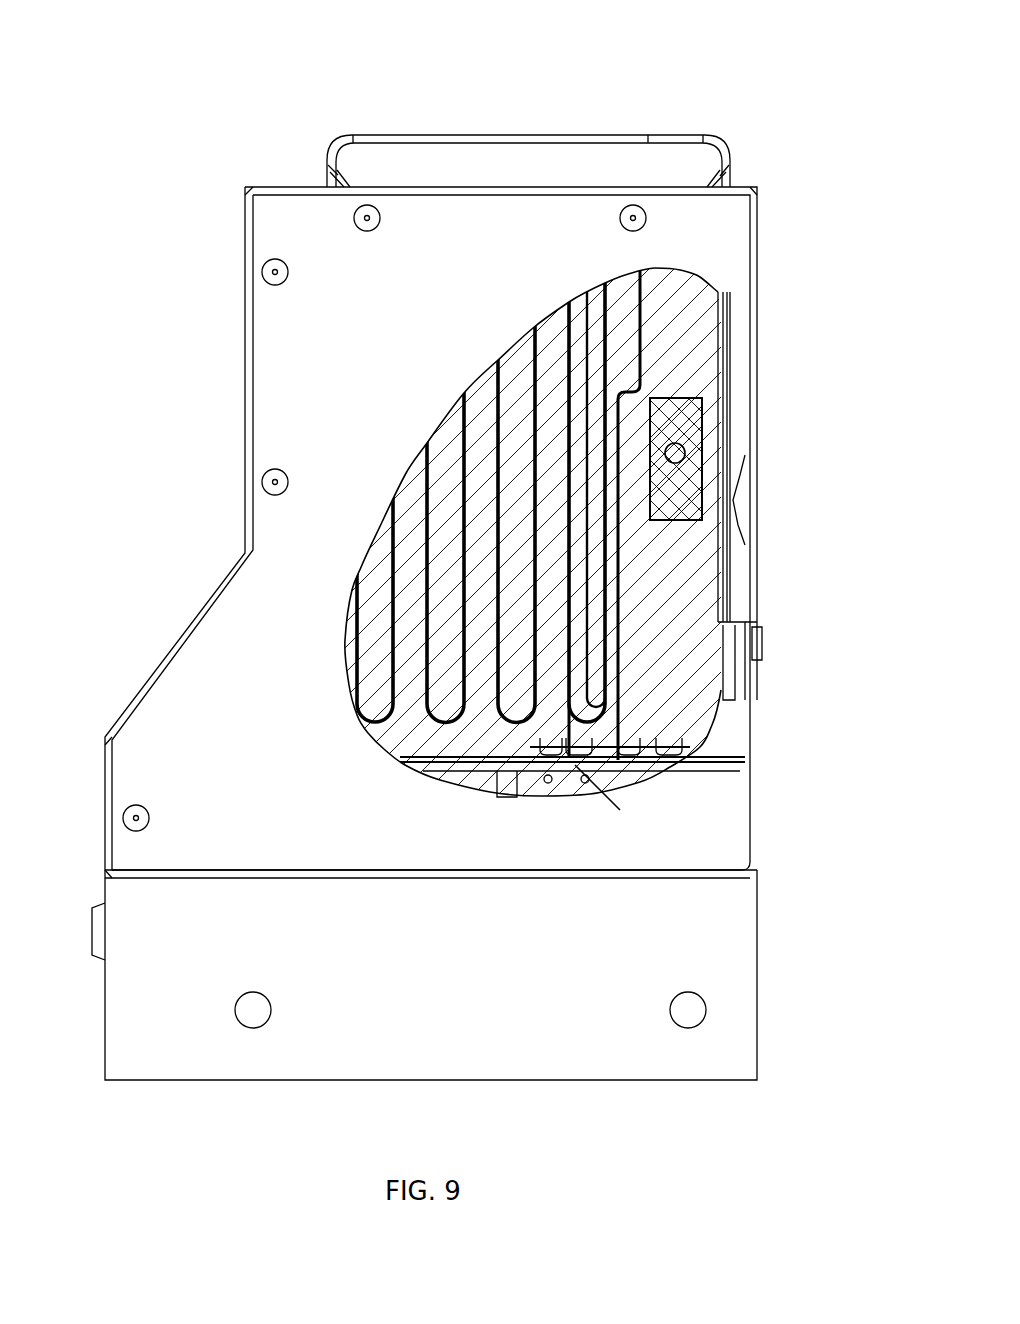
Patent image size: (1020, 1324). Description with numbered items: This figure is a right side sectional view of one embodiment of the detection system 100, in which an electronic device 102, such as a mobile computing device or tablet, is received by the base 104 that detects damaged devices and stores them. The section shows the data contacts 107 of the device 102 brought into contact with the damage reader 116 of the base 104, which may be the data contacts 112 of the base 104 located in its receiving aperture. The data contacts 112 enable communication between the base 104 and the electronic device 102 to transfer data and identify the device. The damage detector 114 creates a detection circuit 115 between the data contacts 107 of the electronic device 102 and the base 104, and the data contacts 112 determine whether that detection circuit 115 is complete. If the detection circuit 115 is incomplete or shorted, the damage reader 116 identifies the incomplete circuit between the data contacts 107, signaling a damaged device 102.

The detection system 100 is at (275, 390).
The electronic device 102 is at (540, 170).
The base 104 is at (308, 230).
The data contacts of the device 107 is at (622, 716).
The data contacts of the base 112 is at (590, 770).
The damage detector 114 is at (640, 355).
The detection circuit 115 is at (430, 572).
The damage reader 116 is at (585, 775).